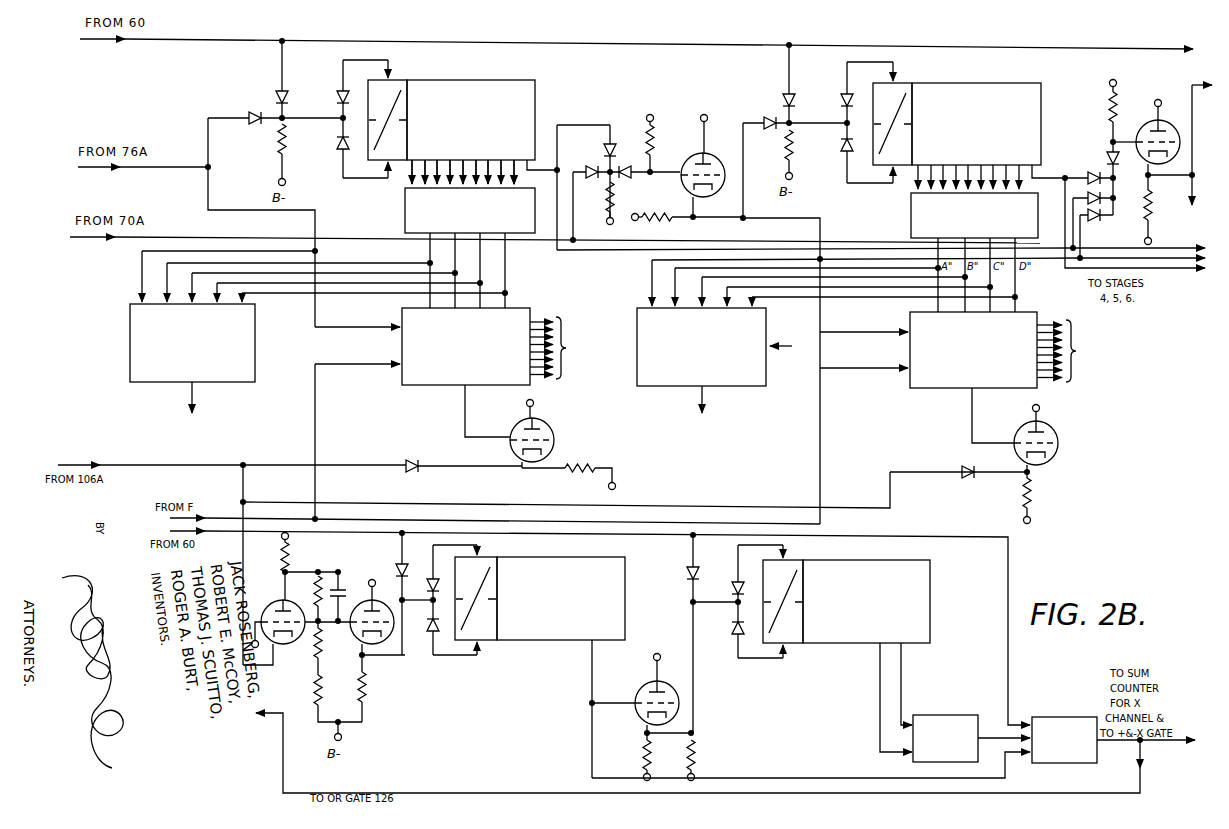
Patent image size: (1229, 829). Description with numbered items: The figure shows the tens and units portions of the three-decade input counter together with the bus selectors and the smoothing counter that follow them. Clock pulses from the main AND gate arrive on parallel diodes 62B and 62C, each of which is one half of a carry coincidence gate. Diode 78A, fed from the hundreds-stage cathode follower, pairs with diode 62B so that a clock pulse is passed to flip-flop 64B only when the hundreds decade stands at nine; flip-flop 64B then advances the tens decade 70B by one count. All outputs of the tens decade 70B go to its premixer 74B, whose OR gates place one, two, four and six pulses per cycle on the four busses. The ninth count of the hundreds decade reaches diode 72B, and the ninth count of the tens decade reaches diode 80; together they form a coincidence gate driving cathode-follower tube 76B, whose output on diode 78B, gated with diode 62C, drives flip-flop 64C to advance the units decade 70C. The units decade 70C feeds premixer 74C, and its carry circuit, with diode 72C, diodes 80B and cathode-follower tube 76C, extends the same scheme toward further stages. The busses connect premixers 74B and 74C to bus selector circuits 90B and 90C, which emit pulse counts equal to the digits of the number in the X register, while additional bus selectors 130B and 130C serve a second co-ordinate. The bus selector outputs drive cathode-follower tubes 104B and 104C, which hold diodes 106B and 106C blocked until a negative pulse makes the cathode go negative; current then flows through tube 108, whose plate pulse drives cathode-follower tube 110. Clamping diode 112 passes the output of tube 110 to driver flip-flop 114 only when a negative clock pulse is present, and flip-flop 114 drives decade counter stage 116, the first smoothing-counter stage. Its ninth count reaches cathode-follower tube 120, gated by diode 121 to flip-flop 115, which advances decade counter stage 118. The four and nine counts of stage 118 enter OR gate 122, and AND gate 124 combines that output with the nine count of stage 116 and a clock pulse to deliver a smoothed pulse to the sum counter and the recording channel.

The diode 62B is at (275, 98).
The diode 78A is at (248, 118).
The flip-flop 64B is at (396, 80).
The tens decade 70B is at (486, 84).
The premixer 74B is at (405, 210).
The diode 72B is at (586, 166).
The diode 80 is at (612, 144).
The cathode-follower tube 76B is at (692, 162).
The diode 62C is at (783, 98).
The diode 78B is at (768, 130).
The flip-flop 64C is at (901, 82).
The units decade 70C is at (998, 88).
The premixer 74C is at (911, 214).
The cathode-follower tube 76C is at (1164, 114).
The diodes 80B is at (1089, 196).
The diode 72C is at (1092, 222).
The bus selector 130B is at (130, 326).
The bus selector circuit 90B is at (419, 386).
The diode 106B is at (408, 462).
The cathode-follower tube 104B is at (512, 449).
The bus selector 130C is at (670, 388).
The bus selector circuit 90C is at (937, 391).
The cathode-follower tube 104C is at (1059, 434).
The diode 106C is at (968, 478).
The tube 108 is at (280, 600).
The cathode-follower tube 110 is at (366, 596).
The diode 112 is at (409, 565).
The driver flip-flop 114 is at (480, 563).
The decade counter stage 116 is at (559, 564).
The diode 121 is at (686, 574).
The flip-flop 115 is at (804, 567).
The decade counter stage 118 is at (882, 567).
The cathode-follower tube 120 is at (648, 684).
The OR gate 122 is at (966, 715).
The AND gate 124 is at (1050, 717).